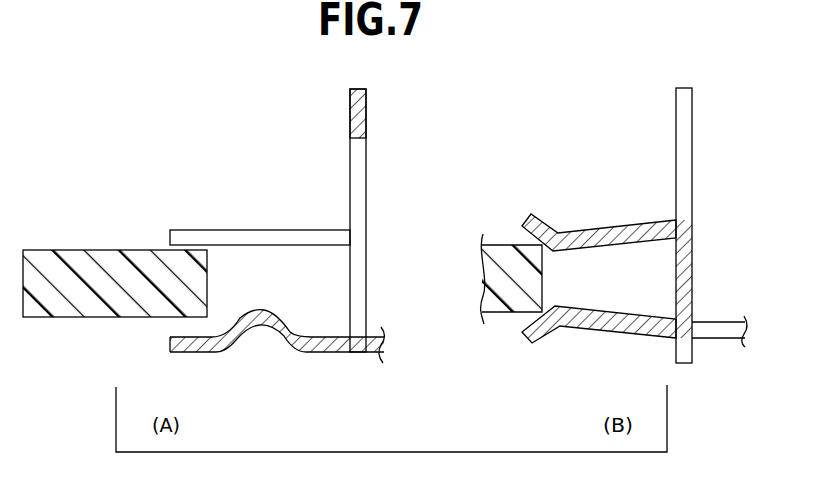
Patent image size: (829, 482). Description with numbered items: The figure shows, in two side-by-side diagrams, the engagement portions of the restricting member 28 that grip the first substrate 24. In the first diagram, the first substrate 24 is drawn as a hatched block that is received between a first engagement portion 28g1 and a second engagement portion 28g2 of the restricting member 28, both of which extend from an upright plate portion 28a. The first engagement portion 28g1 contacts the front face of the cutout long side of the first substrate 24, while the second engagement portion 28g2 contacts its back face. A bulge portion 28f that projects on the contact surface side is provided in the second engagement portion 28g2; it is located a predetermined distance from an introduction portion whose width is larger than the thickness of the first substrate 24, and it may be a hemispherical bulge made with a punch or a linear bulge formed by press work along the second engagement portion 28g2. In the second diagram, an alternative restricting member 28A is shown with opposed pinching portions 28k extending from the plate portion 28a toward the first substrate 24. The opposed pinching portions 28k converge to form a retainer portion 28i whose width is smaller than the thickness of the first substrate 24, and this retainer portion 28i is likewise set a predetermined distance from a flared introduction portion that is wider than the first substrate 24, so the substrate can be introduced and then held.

The first substrate 24 is at (73, 262).
The restricting member 28 is at (277, 229).
The restricting member 28A is at (634, 224).
The plate portion of holder 28a is at (366, 131).
The first engagement portion 28g1 is at (303, 230).
The second engagement portion 28g2 is at (277, 342).
The bulge portion 28f is at (258, 312).
The opposed pinching portions 28k is at (625, 232).
The retainer portion 28i is at (552, 258).